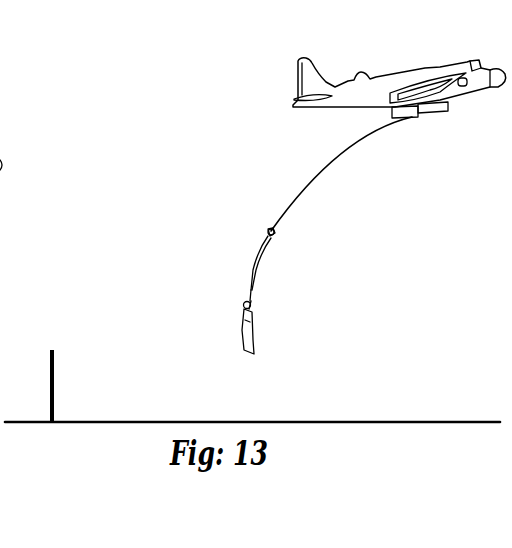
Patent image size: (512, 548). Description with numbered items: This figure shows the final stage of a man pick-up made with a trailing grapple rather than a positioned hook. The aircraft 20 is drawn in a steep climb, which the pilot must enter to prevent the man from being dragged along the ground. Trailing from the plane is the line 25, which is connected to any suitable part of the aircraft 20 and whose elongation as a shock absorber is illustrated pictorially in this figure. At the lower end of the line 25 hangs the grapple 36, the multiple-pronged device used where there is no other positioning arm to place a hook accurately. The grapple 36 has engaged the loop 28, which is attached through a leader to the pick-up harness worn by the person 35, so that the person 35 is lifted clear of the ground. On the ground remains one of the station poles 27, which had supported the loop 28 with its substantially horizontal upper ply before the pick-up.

The aircraft 20 is at (384, 77).
The line 25 is at (330, 167).
The grapple 36 is at (267, 229).
The loop 28 is at (259, 263).
The person 35 is at (255, 341).
The station poles 27 is at (54, 394).